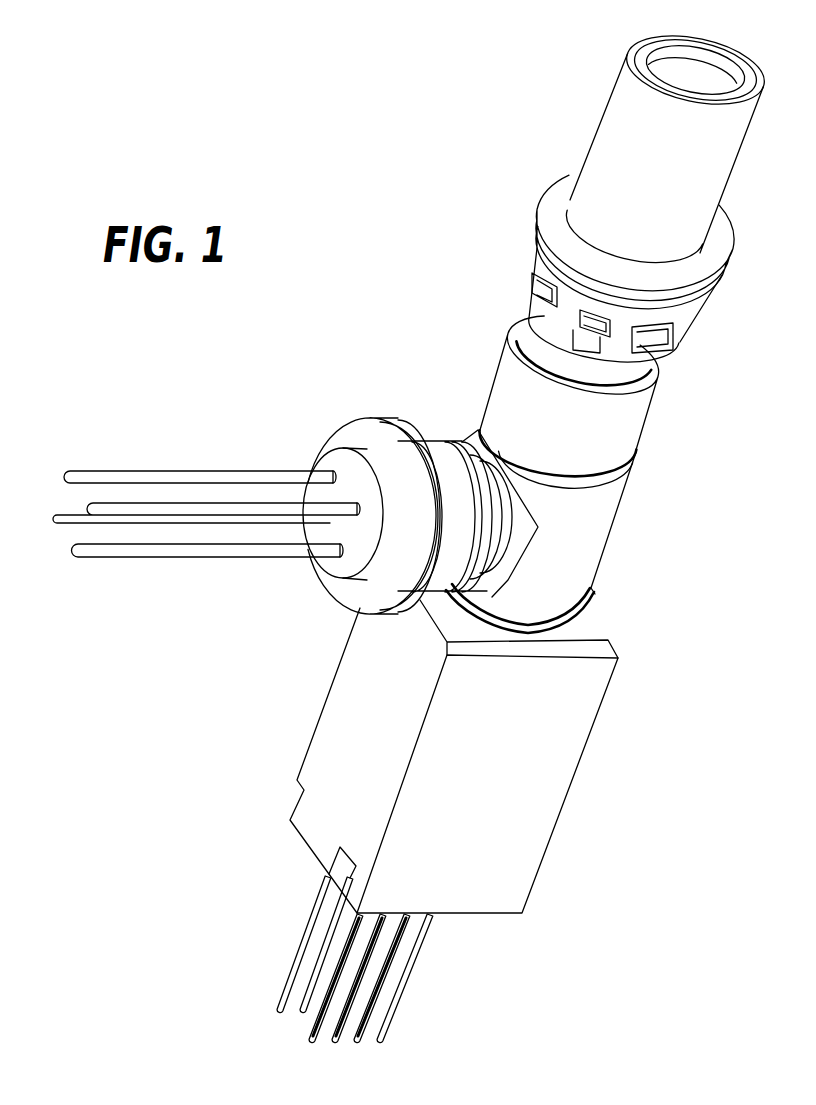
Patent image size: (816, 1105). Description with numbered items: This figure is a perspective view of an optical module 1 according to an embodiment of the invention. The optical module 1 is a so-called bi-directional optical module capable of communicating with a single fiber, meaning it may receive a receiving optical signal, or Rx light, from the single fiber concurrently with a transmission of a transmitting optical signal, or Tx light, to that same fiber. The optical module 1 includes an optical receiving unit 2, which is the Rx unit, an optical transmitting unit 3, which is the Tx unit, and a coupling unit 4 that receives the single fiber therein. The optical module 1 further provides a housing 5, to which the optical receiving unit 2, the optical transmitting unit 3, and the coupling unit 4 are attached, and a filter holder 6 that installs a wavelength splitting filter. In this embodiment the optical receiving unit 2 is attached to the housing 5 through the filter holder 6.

The optical module 1 is at (393, 161).
The optical receiving unit 2 is at (365, 418).
The optical transmitting unit 3 is at (342, 727).
The coupling unit 4 is at (546, 200).
The housing 5 is at (598, 527).
The filter holder 6 is at (474, 440).